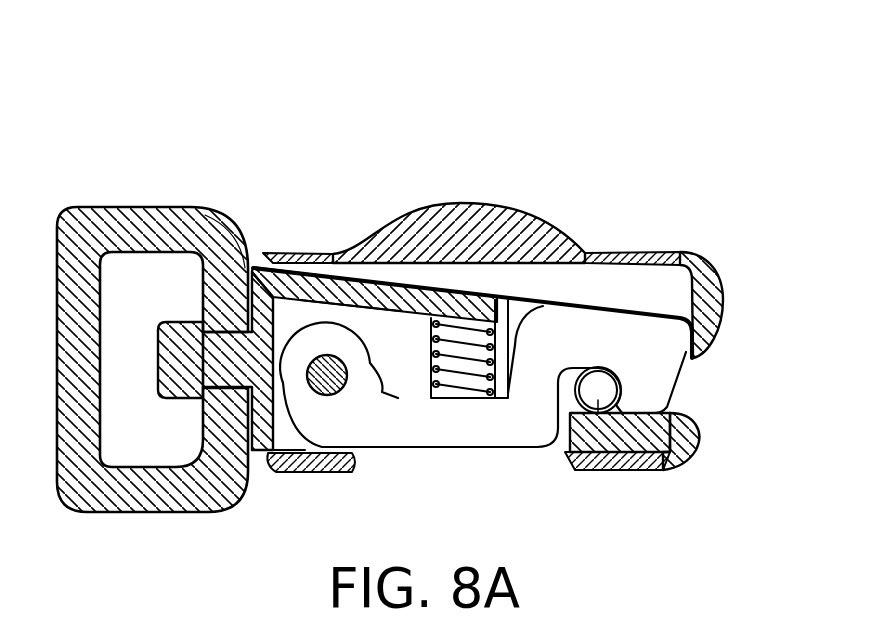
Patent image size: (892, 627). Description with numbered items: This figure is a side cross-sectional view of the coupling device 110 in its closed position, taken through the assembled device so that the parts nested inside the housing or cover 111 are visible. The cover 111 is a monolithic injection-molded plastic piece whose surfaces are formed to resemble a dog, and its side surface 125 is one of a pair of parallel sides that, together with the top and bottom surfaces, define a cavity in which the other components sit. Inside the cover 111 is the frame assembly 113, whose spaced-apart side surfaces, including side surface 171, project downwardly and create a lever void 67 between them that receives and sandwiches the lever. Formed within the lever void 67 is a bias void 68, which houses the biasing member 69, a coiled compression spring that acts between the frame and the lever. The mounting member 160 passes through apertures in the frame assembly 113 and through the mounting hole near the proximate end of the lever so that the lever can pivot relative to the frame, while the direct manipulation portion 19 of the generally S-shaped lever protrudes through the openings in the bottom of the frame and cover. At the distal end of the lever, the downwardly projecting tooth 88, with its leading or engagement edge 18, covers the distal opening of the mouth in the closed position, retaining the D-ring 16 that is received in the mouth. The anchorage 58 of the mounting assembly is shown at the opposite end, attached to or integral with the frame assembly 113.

The coupling device 110 is at (250, 113).
The anchorage 58 is at (150, 207).
The frame assembly 113 is at (257, 267).
The biasing member 69 is at (462, 300).
The side surface 171 is at (385, 325).
The housing or cover 111 is at (523, 210).
The side surface 125 is at (650, 285).
The bias void 68 is at (480, 358).
The leading or engagement edge 18 is at (680, 388).
The lever void 67 is at (408, 373).
The mounting member 160 is at (318, 385).
The direct manipulation portion 19 is at (445, 433).
The D-ring 16 is at (570, 457).
The tooth 88 is at (663, 467).